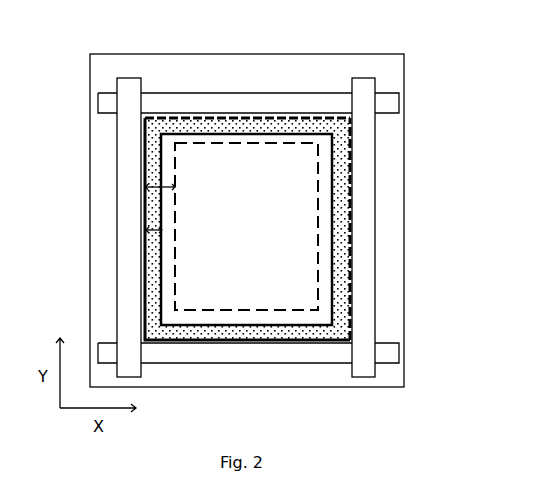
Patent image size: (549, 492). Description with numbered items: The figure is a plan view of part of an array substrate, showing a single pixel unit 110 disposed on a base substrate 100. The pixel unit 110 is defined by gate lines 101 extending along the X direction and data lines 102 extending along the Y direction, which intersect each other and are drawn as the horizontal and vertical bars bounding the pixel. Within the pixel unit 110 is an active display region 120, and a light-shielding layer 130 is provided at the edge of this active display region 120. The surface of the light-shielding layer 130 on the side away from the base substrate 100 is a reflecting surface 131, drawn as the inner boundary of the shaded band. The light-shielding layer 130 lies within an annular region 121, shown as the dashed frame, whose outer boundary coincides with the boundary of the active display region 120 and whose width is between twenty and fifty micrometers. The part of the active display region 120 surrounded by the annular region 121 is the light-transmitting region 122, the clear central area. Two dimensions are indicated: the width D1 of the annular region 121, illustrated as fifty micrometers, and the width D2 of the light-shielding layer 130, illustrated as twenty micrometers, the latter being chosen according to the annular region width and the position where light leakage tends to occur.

The base substrate 100 is at (390, 78).
The gate line 101 is at (388, 103).
The data line 102 is at (127, 137).
The pixel unit 110 is at (228, 117).
The active display region 120 is at (145, 280).
The light-shielding layer 130 is at (340, 213).
The reflecting surface 131 is at (246, 229).
The annular region 121 is at (320, 310).
The light-transmitting region 122 is at (312, 284).
The width of the annular region D1 is at (147, 187).
The width of the light-shielding layer D2 is at (145, 230).